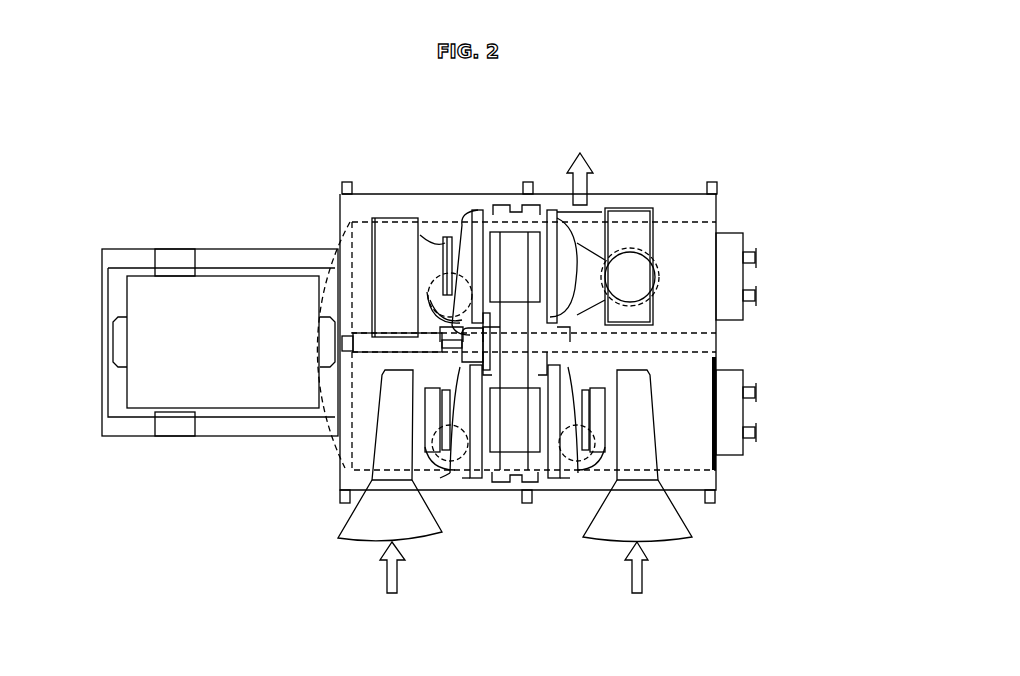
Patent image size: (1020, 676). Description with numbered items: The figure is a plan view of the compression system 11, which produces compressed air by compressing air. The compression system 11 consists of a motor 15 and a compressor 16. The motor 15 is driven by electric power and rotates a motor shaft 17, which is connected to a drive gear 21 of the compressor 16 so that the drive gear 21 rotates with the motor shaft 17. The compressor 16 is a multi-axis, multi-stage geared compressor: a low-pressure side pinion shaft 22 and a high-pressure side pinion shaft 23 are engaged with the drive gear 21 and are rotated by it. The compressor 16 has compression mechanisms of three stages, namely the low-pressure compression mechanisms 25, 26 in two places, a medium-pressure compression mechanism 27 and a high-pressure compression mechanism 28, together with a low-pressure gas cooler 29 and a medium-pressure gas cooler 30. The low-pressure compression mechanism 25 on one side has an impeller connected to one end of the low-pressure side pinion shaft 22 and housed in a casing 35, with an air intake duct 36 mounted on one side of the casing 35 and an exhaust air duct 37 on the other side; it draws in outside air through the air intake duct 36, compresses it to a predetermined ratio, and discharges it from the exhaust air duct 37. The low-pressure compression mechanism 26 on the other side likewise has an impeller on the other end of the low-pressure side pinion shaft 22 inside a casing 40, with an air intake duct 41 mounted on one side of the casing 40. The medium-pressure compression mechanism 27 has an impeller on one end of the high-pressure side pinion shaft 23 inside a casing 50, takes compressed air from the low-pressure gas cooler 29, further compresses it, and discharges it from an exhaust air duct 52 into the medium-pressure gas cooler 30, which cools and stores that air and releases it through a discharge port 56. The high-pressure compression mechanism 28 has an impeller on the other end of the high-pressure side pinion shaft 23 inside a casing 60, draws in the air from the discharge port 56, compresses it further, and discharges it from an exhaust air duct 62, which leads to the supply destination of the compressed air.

The compression system 11 is at (746, 156).
The motor 15 is at (205, 244).
The compressor 16 is at (339, 174).
The motor shaft 17 is at (402, 345).
The drive gear 21 is at (520, 340).
The low-pressure side pinion shaft 22 is at (515, 435).
The high-pressure side pinion shaft 23 is at (513, 250).
The low-pressure compression mechanism 25 is at (459, 493).
The low-pressure compression mechanism 26 is at (569, 494).
The medium-pressure compression mechanism 27 is at (458, 201).
The high-pressure compression mechanism 28 is at (550, 200).
The low-pressure gas cooler 29 is at (732, 412).
The medium-pressure gas cooler 30 is at (732, 277).
The casing 35 is at (467, 478).
The air intake duct 36 is at (367, 518).
The exhaust air duct 37 is at (430, 474).
The casing 40 is at (560, 493).
The air intake duct 41 is at (662, 518).
The casing 50 is at (474, 250).
The exhaust air duct 52 is at (418, 308).
The discharge port 56 is at (675, 230).
The casing 60 is at (563, 238).
The exhaust air duct 62 is at (583, 243).